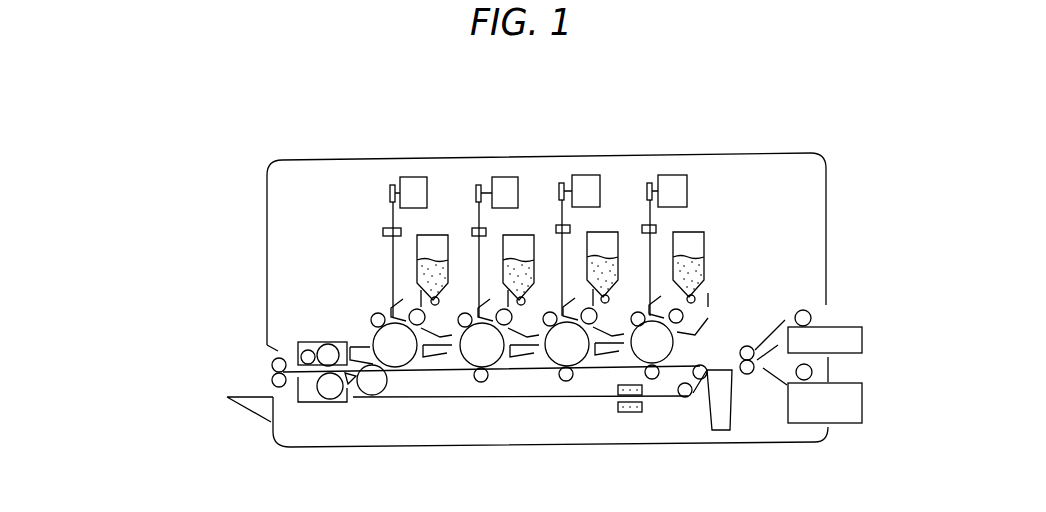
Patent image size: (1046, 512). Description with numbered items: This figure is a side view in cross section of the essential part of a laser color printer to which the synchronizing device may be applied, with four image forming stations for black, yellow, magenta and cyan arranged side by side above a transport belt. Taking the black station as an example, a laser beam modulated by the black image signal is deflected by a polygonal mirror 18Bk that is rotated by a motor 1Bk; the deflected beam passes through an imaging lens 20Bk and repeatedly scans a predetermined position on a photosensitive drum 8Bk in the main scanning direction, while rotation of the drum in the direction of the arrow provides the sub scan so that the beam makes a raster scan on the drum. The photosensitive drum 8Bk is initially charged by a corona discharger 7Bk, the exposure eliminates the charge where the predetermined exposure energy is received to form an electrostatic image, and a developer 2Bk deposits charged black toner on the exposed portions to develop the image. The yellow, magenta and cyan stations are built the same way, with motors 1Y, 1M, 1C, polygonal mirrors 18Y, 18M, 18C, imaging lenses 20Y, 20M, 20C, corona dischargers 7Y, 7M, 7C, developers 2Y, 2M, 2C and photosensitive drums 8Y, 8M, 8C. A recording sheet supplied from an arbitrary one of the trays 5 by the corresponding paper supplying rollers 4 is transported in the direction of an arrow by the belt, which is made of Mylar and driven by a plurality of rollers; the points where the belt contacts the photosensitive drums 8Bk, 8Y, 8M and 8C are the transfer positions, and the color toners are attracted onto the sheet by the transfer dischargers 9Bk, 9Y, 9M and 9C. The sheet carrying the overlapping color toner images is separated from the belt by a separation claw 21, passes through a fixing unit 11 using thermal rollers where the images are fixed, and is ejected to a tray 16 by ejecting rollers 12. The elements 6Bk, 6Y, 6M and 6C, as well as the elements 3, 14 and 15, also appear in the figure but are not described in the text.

The motor 1C is at (413, 177).
The motor 1M is at (505, 177).
The motor 1Y is at (583, 175).
The motor 1Bk is at (672, 175).
The polygonal mirror 18C is at (391, 186).
The polygonal mirror 18M is at (479, 185).
The polygonal mirror 18Y is at (562, 184).
The polygonal mirror 18Bk is at (647, 183).
The imaging lens 20C is at (385, 228).
The imaging lens 20M is at (487, 232).
The imaging lens 20Y is at (568, 225).
The imaging lens 20Bk is at (658, 228).
The developer 2C is at (412, 292).
The developer 2M is at (500, 288).
The developer 2Y is at (590, 297).
The developer 2Bk is at (673, 303).
The cyan charger 6C is at (367, 348).
The magenta charger 6M is at (462, 332).
The yellow charger 6Y is at (520, 343).
The black charger 6Bk is at (628, 340).
The corona discharger 7C is at (375, 318).
The corona discharger 7M is at (463, 313).
The corona discharger 7Y is at (550, 311).
The corona discharger 7Bk is at (638, 311).
The photosensitive drum 8C is at (420, 350).
The photosensitive drum 8M is at (517, 355).
The photosensitive drum 8Y is at (590, 355).
The photosensitive drum 8Bk is at (673, 352).
The transfer discharger 9C is at (383, 395).
The transfer discharger 9M is at (481, 383).
The transfer discharger 9Y is at (570, 383).
The transfer discharger 9Bk is at (653, 382).
The fixing unit 11 is at (333, 402).
The ejecting rollers 12 is at (272, 370).
The belt sensor 14 is at (633, 413).
The fixing unit 15 is at (728, 430).
The tray 16 is at (240, 412).
The separation claw 21 is at (353, 384).
The discharge rollers 3 is at (751, 374).
The paper supplying rollers 4 is at (802, 310).
The trays 5 is at (862, 327).